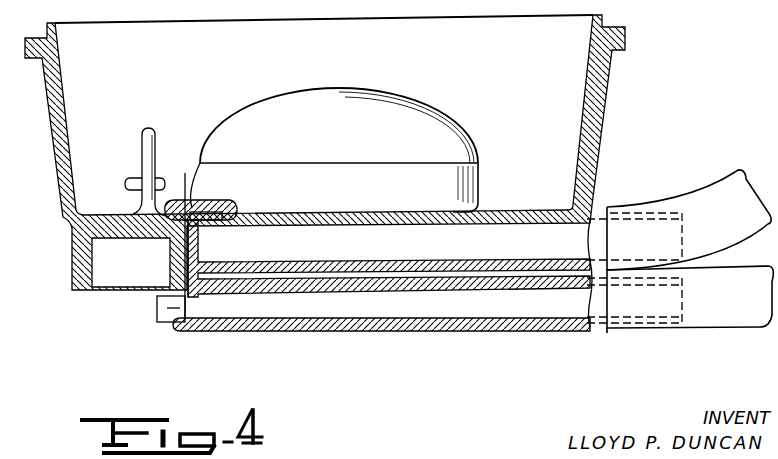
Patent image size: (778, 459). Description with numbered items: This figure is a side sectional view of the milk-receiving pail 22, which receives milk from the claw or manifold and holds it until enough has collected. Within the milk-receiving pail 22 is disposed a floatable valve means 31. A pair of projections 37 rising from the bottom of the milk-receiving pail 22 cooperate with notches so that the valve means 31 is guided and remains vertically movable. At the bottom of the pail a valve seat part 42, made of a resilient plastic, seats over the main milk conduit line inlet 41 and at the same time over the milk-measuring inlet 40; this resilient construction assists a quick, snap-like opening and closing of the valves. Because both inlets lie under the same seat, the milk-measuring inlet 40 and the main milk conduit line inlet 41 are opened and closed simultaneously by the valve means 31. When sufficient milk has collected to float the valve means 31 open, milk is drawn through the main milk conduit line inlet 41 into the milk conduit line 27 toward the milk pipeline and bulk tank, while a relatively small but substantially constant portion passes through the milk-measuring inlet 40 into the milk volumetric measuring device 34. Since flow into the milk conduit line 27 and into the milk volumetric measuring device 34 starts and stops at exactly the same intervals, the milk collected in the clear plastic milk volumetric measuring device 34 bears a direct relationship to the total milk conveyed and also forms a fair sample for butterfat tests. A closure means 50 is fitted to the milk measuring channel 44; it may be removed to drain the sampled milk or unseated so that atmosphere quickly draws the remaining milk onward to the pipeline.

The milk-receiving pail 22 is at (54, 140).
The projections 37 is at (143, 137).
The floatable valve means 31 is at (343, 145).
The milk-measuring inlet 40 is at (185, 198).
The valve seat part 42 is at (200, 205).
The main milk conduit line inlet 41 is at (205, 228).
The milk measuring channel 44 is at (374, 315).
The closure means 50 is at (160, 306).
The milk conduit line 27 is at (727, 231).
The milk volumetric measuring device 34 is at (727, 309).